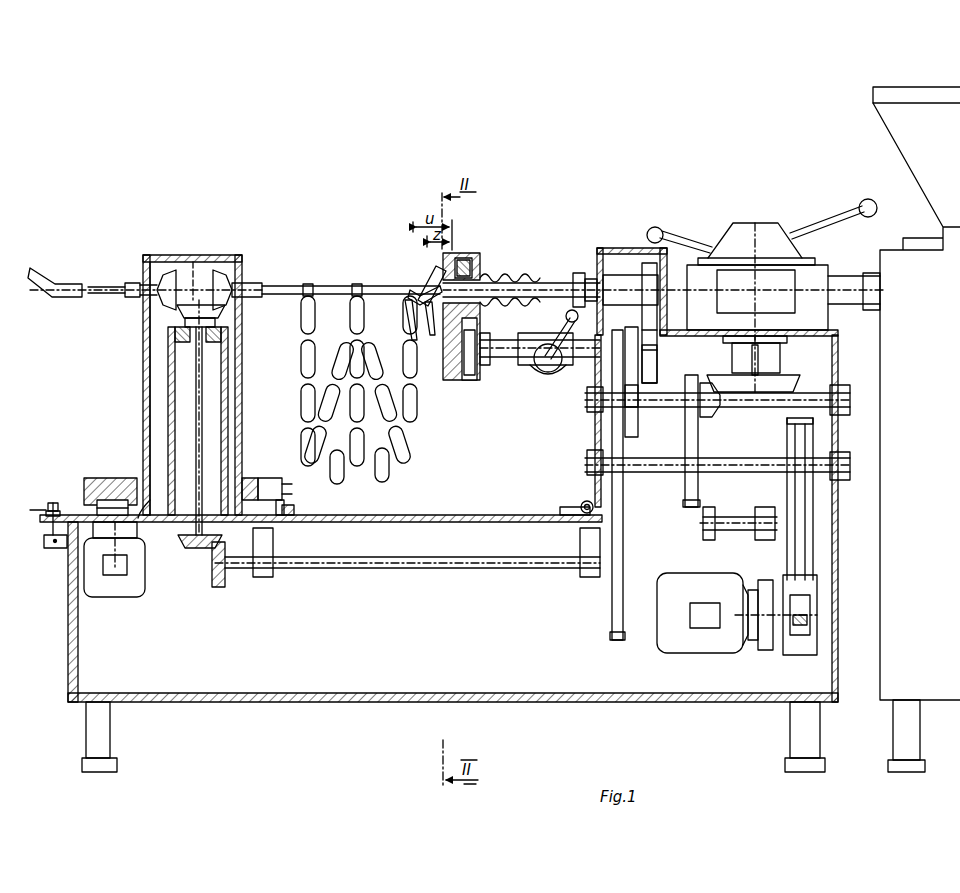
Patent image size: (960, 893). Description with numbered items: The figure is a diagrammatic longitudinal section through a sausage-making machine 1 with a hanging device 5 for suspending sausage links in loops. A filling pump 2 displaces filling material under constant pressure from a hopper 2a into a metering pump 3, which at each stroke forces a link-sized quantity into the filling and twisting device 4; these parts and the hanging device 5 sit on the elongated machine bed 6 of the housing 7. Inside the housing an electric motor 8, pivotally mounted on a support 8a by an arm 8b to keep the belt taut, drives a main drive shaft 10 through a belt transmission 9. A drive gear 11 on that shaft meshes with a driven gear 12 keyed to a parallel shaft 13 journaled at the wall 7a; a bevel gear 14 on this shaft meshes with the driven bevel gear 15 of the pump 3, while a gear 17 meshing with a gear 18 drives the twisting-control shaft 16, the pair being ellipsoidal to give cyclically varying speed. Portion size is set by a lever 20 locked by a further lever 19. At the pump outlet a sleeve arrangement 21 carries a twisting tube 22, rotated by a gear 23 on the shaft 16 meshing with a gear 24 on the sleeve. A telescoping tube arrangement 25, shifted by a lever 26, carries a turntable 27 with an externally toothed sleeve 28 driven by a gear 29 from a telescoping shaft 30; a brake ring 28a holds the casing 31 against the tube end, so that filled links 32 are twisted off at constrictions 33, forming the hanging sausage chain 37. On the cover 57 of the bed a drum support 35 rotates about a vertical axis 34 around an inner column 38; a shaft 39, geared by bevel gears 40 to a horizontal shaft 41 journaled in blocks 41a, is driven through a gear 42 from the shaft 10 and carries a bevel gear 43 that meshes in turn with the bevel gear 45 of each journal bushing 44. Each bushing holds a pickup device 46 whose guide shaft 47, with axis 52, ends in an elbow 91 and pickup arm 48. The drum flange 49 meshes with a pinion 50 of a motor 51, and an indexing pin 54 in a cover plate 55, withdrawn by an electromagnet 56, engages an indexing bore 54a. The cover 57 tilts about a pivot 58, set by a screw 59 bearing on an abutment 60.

The sausage-making machine 1 is at (720, 703).
The filling pump 2 is at (915, 215).
The hopper 2a is at (886, 95).
The metering pump 3 is at (752, 214).
The filling and twisting device 4 is at (587, 212).
The hanging device 5 is at (213, 232).
The machine bed 6 is at (262, 703).
The housing 7 is at (840, 704).
The housing wall 7a is at (594, 418).
The electric motor 8 is at (716, 645).
The support 8a is at (760, 540).
The arm 8b is at (768, 651).
The belt transmission 9 is at (812, 545).
The main drive shaft 10 is at (750, 468).
The drive gear 11 is at (688, 506).
The driven gear 12 is at (690, 378).
The shaft 13 is at (755, 404).
The bevel gear 14 is at (712, 416).
The driven bevel gear 15 is at (792, 377).
The twisting-control shaft 16 is at (658, 353).
The gear 17 is at (636, 420).
The gear 18 is at (594, 388).
The lever 19 is at (820, 216).
The lever 20 is at (672, 232).
The sleeve arrangement 21 is at (622, 275).
The twisting tube 22 is at (560, 282).
The gear 23 is at (648, 332).
The gear 24 is at (648, 262).
The telescoping tube arrangement 25 is at (520, 340).
The lever 26 is at (562, 330).
The turntable 27 is at (447, 382).
The externally toothed sleeve 28 is at (470, 262).
The brake ring 28a is at (462, 298).
The gear 29 is at (474, 382).
The telescoping shaft 30 is at (522, 366).
The tube of sausage casing 31 is at (512, 278).
The sausage links 32 is at (415, 317).
The constrictions 33 is at (410, 292).
The vertical axis 34 is at (192, 255).
The support 35 is at (145, 400).
The sausage chain 37 is at (380, 470).
The hollow column 38 is at (225, 412).
The shaft 39 is at (203, 360).
The bevel gears 40 is at (205, 550).
The horizontal shaft 41 is at (395, 569).
The blocks 41a is at (278, 540).
The gear 42 is at (622, 530).
The bevel gear 43 is at (182, 312).
The journal bushings 44 is at (253, 284).
The bevel gear 45 is at (222, 272).
The pickup device 46 is at (80, 266).
The guide shaft 47 is at (335, 288).
The pickup arm 48 is at (430, 264).
The drum flange 49 is at (295, 515).
The pinion 50 is at (94, 500).
The electric motor 51 is at (140, 595).
The axis of rotation 52 is at (308, 284).
The indexing pin 54 is at (270, 478).
The indexing bore 54a is at (158, 480).
The cover plate 55 is at (112, 478).
The electromagnet 56 is at (287, 480).
The cover 57 is at (420, 515).
The pivot 58 is at (582, 503).
The screw 59 is at (54, 503).
The abutment 60 is at (48, 548).
The central elbow 91 is at (58, 272).